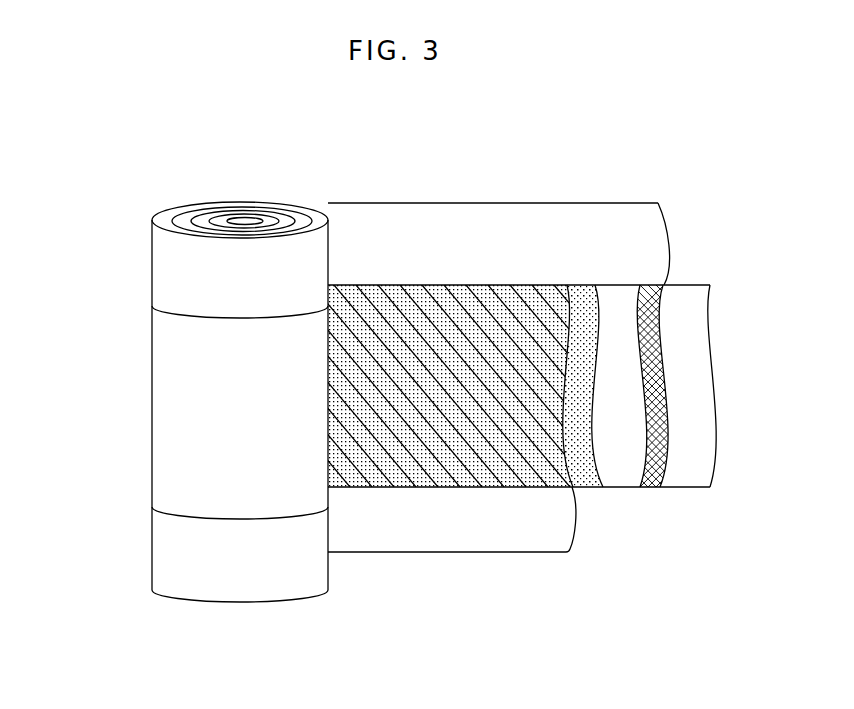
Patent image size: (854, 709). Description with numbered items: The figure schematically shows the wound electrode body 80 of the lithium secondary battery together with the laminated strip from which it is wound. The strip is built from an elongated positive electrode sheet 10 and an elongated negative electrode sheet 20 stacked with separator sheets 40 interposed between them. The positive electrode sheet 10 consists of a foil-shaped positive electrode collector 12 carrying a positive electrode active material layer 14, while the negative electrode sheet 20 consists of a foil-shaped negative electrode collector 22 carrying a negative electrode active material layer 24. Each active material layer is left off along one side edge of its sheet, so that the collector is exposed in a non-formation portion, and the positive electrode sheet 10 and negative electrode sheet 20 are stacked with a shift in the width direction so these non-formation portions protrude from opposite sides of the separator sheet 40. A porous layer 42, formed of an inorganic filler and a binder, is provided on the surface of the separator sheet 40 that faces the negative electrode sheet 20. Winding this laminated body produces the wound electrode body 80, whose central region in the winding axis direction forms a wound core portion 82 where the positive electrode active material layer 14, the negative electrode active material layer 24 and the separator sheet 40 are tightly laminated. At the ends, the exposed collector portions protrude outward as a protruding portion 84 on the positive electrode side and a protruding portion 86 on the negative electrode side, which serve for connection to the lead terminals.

The positive electrode sheet 10 is at (420, 203).
The positive electrode collector 12 is at (633, 215).
The positive electrode active material layer 14 is at (650, 290).
The negative electrode sheet 20 is at (362, 554).
The negative electrode collector 22 is at (430, 537).
The negative electrode active material layer 24 is at (527, 480).
The separator sheet 40 is at (618, 467).
The porous layer 42 is at (579, 300).
The wound electrode body 80 is at (152, 188).
The wound core portion 82 is at (165, 418).
The protruding portion on the positive electrode side 84 is at (165, 287).
The protruding portion on the negative electrode side 86 is at (165, 550).